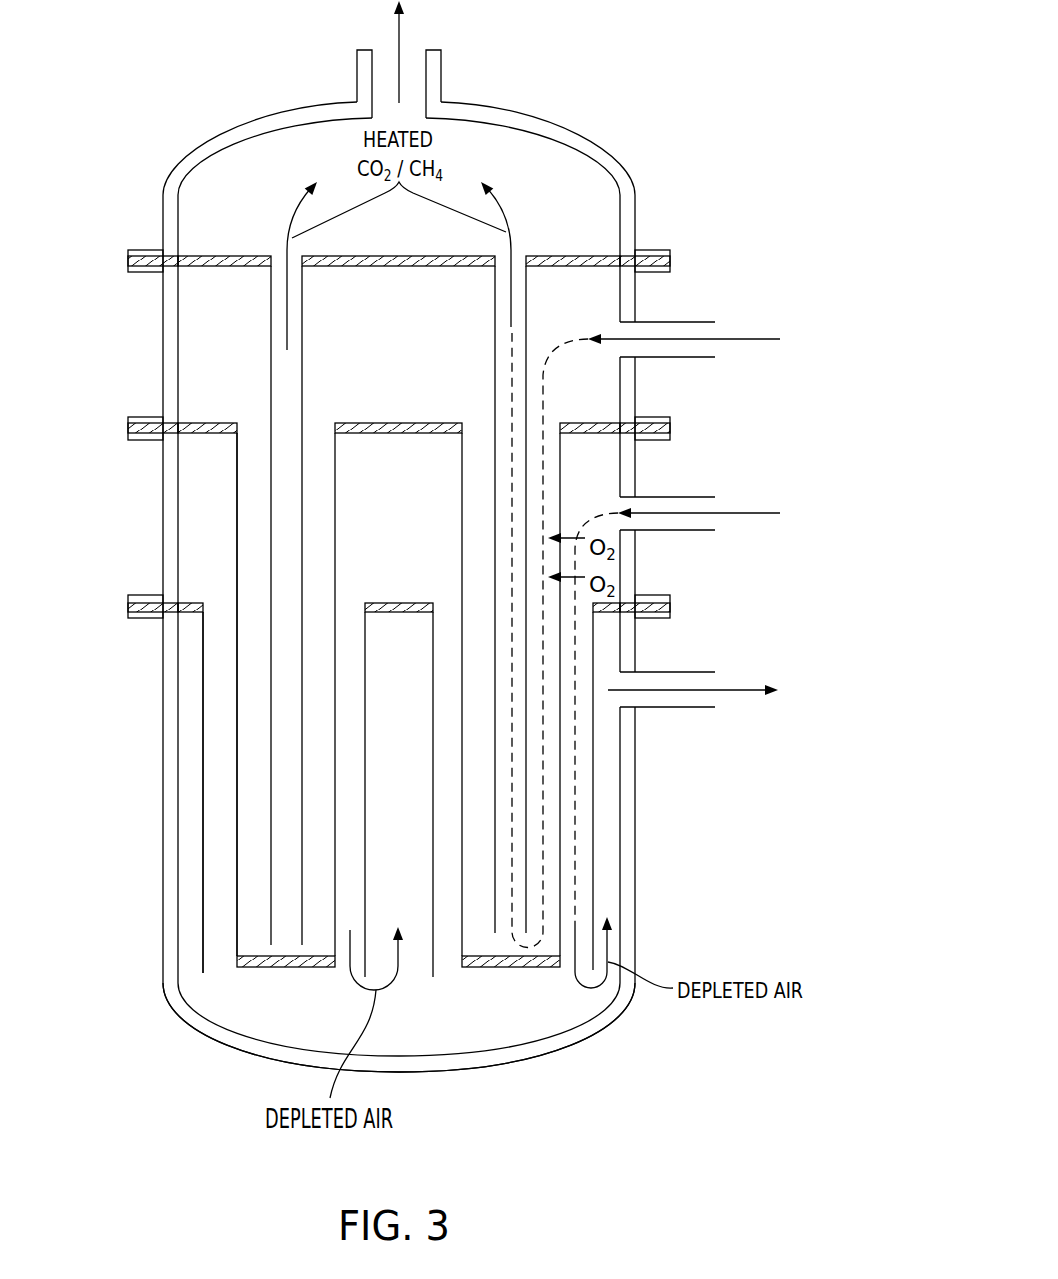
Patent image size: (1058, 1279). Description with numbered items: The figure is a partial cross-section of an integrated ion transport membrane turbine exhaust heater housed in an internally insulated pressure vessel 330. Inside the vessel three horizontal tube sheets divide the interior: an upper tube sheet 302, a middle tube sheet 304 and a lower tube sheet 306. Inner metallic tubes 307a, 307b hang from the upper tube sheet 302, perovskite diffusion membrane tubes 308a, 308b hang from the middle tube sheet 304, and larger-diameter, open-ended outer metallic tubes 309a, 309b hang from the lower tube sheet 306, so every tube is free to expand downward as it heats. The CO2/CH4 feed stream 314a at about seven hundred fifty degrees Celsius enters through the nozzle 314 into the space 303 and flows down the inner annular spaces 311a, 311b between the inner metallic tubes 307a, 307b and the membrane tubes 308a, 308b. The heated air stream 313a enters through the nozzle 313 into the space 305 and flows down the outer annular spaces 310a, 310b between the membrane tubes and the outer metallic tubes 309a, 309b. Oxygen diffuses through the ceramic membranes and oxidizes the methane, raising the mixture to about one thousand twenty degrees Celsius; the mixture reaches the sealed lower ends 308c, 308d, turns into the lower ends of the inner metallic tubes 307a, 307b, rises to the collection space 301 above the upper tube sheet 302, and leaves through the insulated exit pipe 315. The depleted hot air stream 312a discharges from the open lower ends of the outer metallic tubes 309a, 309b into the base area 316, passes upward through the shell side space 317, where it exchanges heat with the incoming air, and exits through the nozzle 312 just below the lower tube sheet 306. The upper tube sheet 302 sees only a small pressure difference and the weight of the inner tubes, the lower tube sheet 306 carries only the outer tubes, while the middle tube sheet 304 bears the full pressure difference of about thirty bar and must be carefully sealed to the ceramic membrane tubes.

The collection space 301 is at (522, 157).
The upper tube sheet 302 is at (227, 253).
The space 303 is at (578, 287).
The middle tube sheet 304 is at (228, 422).
The space 305 is at (595, 483).
The lower tube sheet 306 is at (190, 602).
The inner metallic tube 307a is at (258, 291).
The inner metallic tube 307b is at (481, 291).
The diffusion membrane tube 308a is at (224, 458).
The diffusion membrane tube 308b is at (449, 453).
The sealed lower end 308c is at (248, 980).
The sealed lower end 308d is at (522, 980).
The outer metallic tube 309a is at (189, 773).
The outer metallic tube 309b is at (420, 783).
The outer annular space 310a is at (354, 606).
The outer annular space 310b is at (443, 606).
The inner annular space 311a is at (324, 426).
The inner annular space 311b is at (478, 426).
The nozzle 312 is at (700, 672).
The depleted hot air stream 312a is at (750, 688).
The nozzle 313 is at (698, 497).
The heated air stream 313a is at (748, 513).
The nozzle 314 is at (698, 322).
The CO2/CH4 feed stream 314a is at (748, 338).
The exit pipe 315 is at (442, 77).
The base area 316 is at (446, 1025).
The shell side space 317 is at (610, 760).
The pressure vessel 330 is at (635, 838).